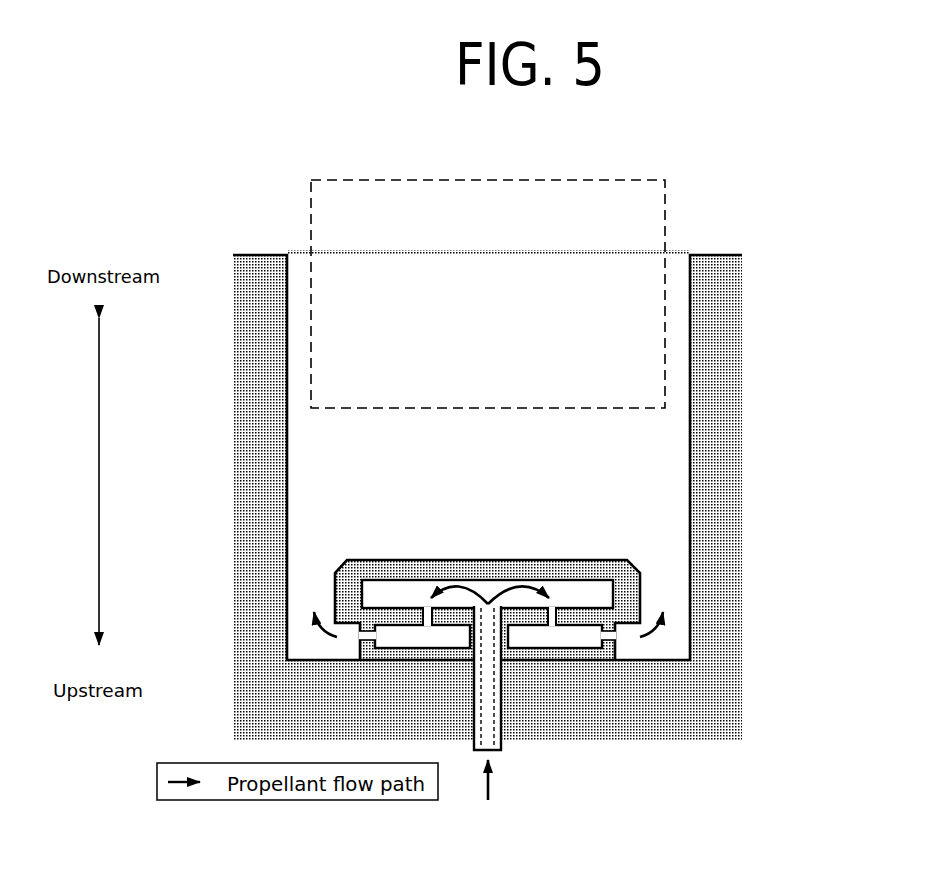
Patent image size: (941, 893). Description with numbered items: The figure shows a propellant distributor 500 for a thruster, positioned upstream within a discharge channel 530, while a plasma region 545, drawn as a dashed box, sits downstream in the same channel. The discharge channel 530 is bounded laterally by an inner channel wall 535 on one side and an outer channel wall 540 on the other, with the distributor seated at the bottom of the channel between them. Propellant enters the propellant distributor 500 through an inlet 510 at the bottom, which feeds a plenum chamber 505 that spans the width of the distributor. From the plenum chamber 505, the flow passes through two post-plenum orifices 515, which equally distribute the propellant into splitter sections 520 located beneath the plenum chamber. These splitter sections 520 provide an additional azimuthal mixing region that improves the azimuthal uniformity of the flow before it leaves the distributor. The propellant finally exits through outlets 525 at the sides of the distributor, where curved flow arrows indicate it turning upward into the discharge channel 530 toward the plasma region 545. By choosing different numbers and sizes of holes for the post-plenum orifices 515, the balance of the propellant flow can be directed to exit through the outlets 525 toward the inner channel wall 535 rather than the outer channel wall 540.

The propellant distributor 500 is at (543, 652).
The plenum chamber 505 is at (487, 562).
The inlet 510 is at (551, 693).
The post-plenum orifices 515 is at (601, 565).
The splitter sections 520 is at (326, 664).
The outlets 525 is at (695, 666).
The discharge channel 530 is at (712, 225).
The inner channel wall 535 is at (231, 272).
The outer channel wall 540 is at (745, 290).
The plasma region 545 is at (488, 294).